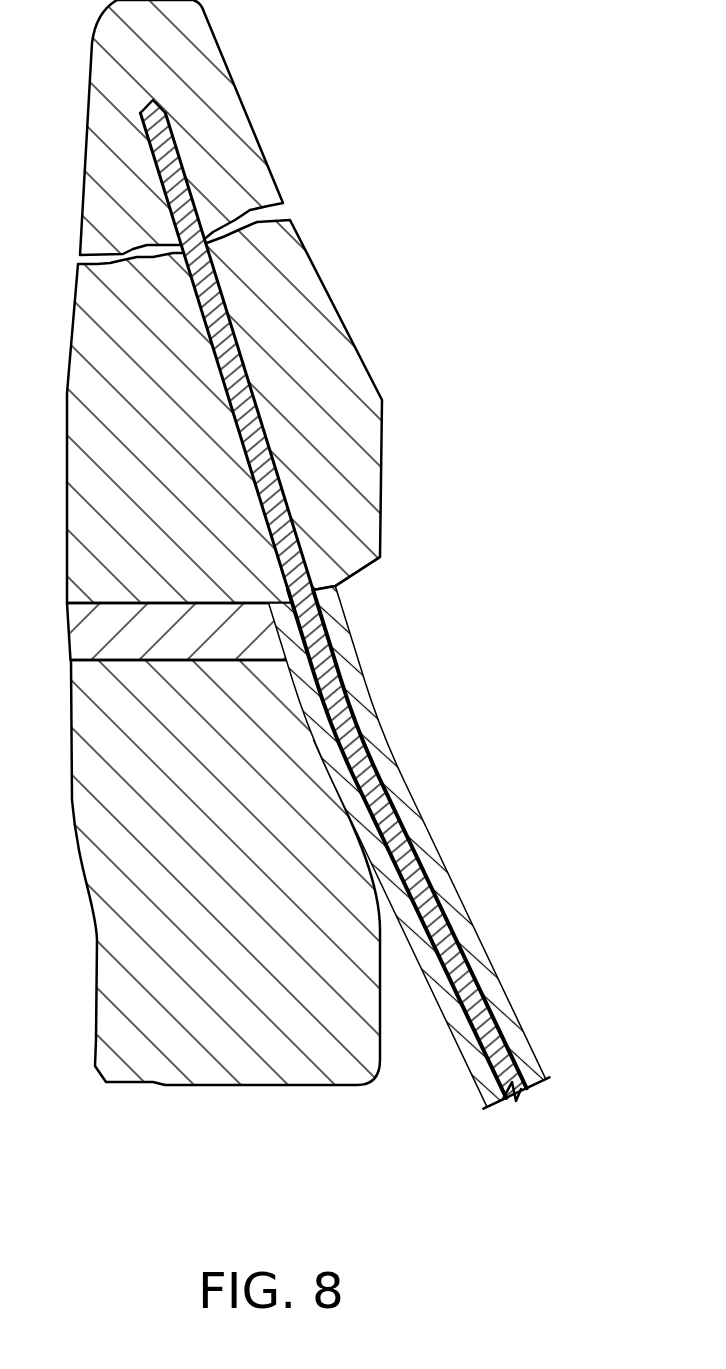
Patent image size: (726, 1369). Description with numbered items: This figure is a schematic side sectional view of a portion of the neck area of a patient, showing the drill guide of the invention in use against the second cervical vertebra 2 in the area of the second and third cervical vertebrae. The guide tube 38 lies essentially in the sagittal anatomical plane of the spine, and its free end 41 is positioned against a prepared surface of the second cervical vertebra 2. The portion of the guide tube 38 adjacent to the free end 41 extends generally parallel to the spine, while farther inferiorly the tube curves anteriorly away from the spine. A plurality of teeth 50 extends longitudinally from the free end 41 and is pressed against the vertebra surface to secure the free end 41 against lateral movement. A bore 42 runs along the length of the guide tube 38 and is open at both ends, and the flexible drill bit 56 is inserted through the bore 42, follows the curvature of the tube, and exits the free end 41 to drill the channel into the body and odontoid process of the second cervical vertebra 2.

The second cervical vertebra 2 is at (268, 163).
The flexible drill bit 56 is at (245, 412).
The teeth 50 is at (335, 586).
The free end 41 is at (338, 620).
The guide tube 38 is at (400, 765).
The bore 42 is at (499, 980).